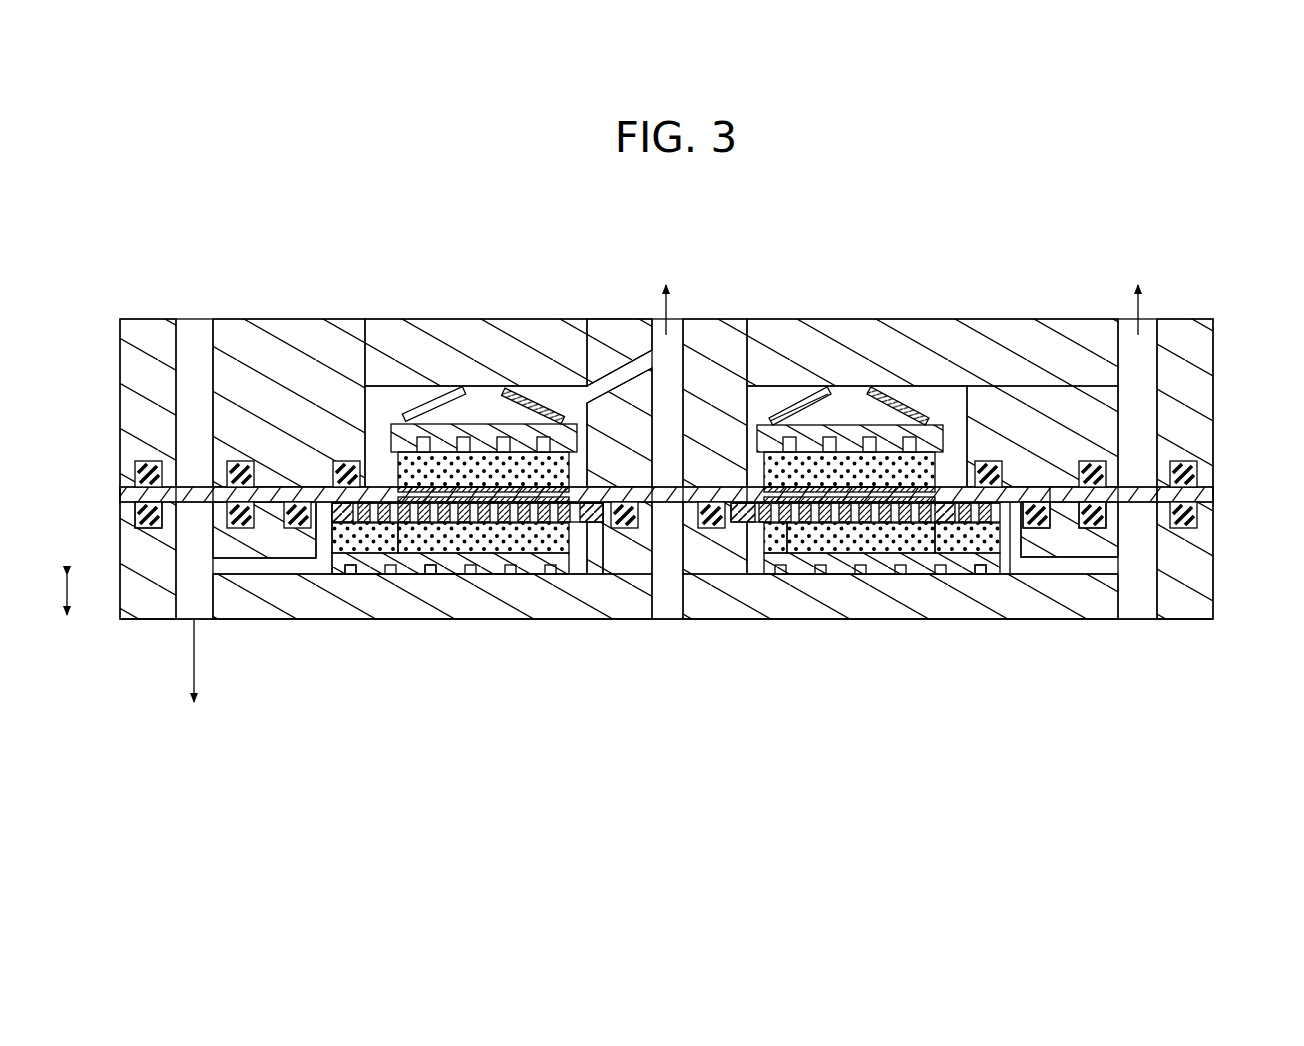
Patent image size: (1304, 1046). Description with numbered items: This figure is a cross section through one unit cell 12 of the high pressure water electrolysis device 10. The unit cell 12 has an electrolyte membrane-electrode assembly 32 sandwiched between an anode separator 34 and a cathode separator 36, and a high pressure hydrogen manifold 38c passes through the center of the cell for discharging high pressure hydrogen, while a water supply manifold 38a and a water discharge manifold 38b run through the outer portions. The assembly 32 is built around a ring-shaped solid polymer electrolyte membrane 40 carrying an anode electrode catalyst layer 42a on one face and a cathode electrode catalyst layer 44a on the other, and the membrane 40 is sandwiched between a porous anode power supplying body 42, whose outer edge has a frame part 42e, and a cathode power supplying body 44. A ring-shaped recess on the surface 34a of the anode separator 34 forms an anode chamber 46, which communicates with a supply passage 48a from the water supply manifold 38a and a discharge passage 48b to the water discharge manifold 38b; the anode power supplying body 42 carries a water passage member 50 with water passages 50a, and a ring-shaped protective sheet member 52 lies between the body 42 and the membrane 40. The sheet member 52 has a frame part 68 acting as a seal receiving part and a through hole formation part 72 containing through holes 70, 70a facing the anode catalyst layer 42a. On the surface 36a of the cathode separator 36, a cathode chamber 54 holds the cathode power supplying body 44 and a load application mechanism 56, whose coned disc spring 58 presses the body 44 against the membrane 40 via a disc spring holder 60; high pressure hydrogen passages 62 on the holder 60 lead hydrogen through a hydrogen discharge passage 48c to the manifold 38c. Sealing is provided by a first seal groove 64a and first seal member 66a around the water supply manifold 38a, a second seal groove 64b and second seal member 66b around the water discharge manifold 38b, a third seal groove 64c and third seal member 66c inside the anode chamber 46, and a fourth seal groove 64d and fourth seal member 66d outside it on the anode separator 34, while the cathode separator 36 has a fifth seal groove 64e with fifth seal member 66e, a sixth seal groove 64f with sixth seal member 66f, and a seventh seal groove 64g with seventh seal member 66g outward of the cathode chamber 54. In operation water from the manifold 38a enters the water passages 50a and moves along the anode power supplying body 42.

The high pressure water electrolysis device 10 is at (694, 209).
The unit cell 12 is at (678, 211).
The electrolyte membrane-electrode assembly 32 is at (116, 492).
The anode separator 34 is at (118, 622).
The surface of the anode separator 34a is at (1056, 495).
The cathode separator 36 is at (118, 316).
The surface of the cathode separator 36a is at (1210, 494).
The water supply manifold 38a is at (185, 600).
The water discharge manifold 38b is at (1155, 605).
The high pressure hydrogen manifold 38c is at (665, 605).
The solid polymer electrolyte membrane 40 is at (272, 497).
The anode power supplying body 42 is at (487, 542).
The anode electrode catalyst layer 42a is at (500, 522).
The frame part 42e is at (375, 540).
The cathode power supplying body 44 is at (437, 460).
The cathode electrode catalyst layer 44a is at (481, 500).
The anode chamber 46 is at (568, 574).
The supply passage 48a is at (257, 566).
The discharge passage 48b is at (1077, 568).
The hydrogen discharge passage 48c is at (613, 370).
The water passage member 50 is at (418, 574).
The water passages 50a is at (432, 574).
The protective sheet member 52 is at (603, 560).
The cathode chamber 54 is at (572, 386).
The load application mechanism 56 is at (413, 403).
The coned disc spring 58 is at (550, 408).
The disc spring holder 60 is at (523, 430).
The high pressure hydrogen passages 62 is at (460, 438).
The first seal groove 64a is at (147, 515).
The second seal groove 64b is at (1100, 516).
The third seal groove 64c is at (597, 526).
The fourth seal groove 64d is at (1033, 528).
The fifth seal groove 64e is at (240, 465).
The sixth seal groove 64f is at (1092, 465).
The seventh seal groove 64g is at (342, 465).
The first seal member 66a is at (147, 522).
The second seal member 66b is at (1192, 515).
The third seal member 66c is at (622, 505).
The fourth seal member 66d is at (1046, 528).
The fifth seal member 66e is at (145, 468).
The sixth seal member 66f is at (1192, 470).
The seventh seal member 66g is at (333, 474).
The frame part 68 is at (333, 508).
The through holes 70 is at (548, 574).
The through holes 70a is at (350, 574).
The through hole formation part 72 is at (458, 514).